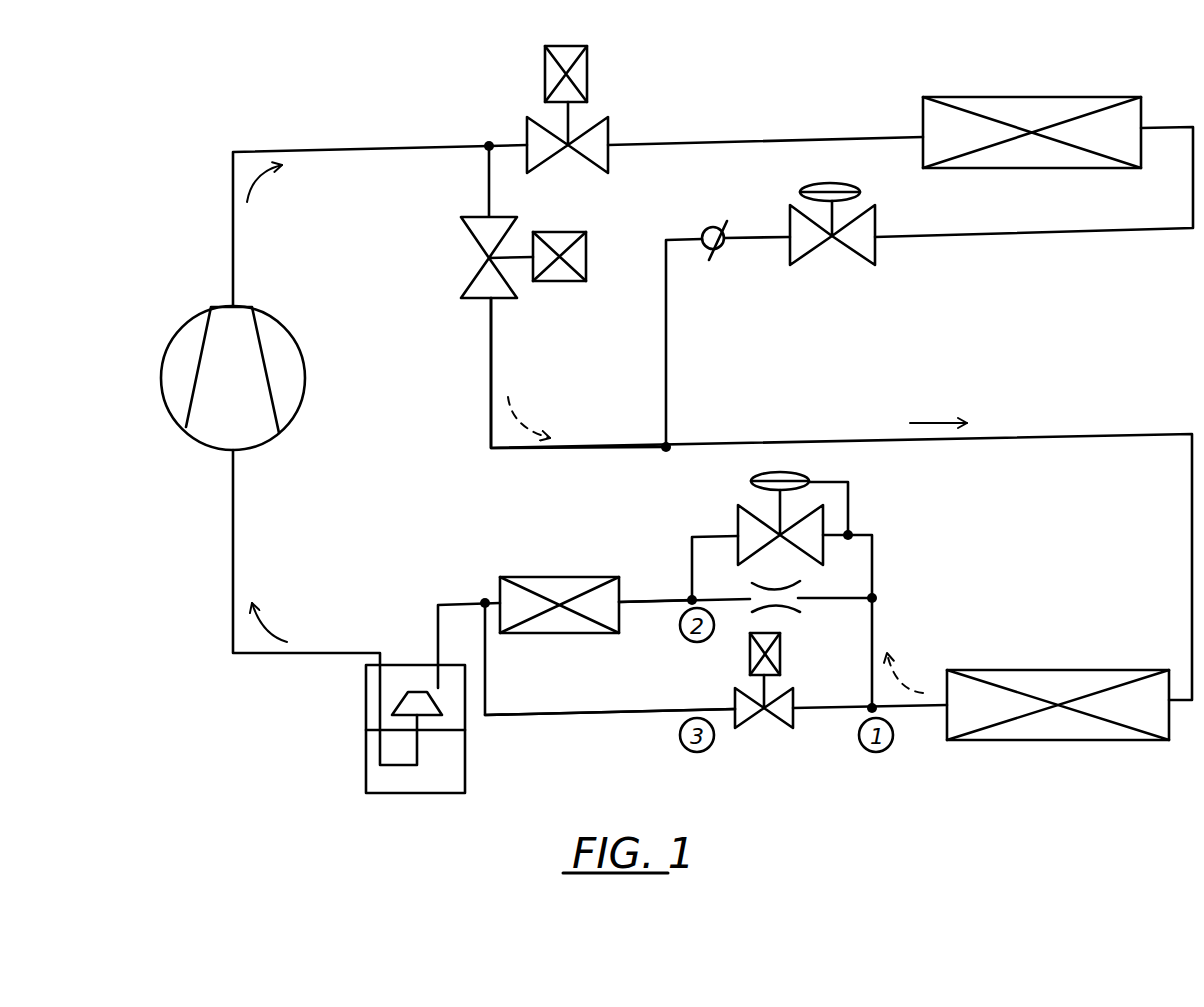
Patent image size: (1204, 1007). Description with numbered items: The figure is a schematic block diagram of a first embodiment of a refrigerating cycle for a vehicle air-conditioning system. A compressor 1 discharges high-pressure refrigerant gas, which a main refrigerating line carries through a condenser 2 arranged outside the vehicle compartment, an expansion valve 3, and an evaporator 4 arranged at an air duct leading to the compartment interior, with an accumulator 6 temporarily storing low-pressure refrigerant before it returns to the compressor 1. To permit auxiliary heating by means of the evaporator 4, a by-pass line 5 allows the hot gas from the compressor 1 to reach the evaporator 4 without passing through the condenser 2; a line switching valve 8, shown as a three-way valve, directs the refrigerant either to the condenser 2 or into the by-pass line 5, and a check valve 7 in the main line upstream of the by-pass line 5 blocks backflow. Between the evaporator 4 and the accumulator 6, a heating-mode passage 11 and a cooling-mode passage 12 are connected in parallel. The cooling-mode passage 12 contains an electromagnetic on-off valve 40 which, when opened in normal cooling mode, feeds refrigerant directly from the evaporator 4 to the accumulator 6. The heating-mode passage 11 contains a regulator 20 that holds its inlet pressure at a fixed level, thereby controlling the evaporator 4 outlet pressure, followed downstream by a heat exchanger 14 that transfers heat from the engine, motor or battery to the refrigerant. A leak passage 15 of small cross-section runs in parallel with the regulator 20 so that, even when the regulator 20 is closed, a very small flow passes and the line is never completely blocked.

The compressor 1 is at (291, 352).
The condenser 2 is at (1022, 97).
The expansion valve 3 is at (862, 245).
The evaporator 4 is at (1057, 670).
The by-pass line 5 is at (490, 343).
The accumulator 6 is at (365, 757).
The check valve 7 is at (712, 228).
The line switching valve 8 is at (603, 166).
The heating-mode passage 11 is at (645, 600).
The cooling-mode passage 12 is at (598, 716).
The heat exchanger 14 is at (577, 633).
The leak passage 15 is at (785, 608).
The regulator 20 is at (728, 506).
The electromagnetic on-off valve 40 is at (770, 731).